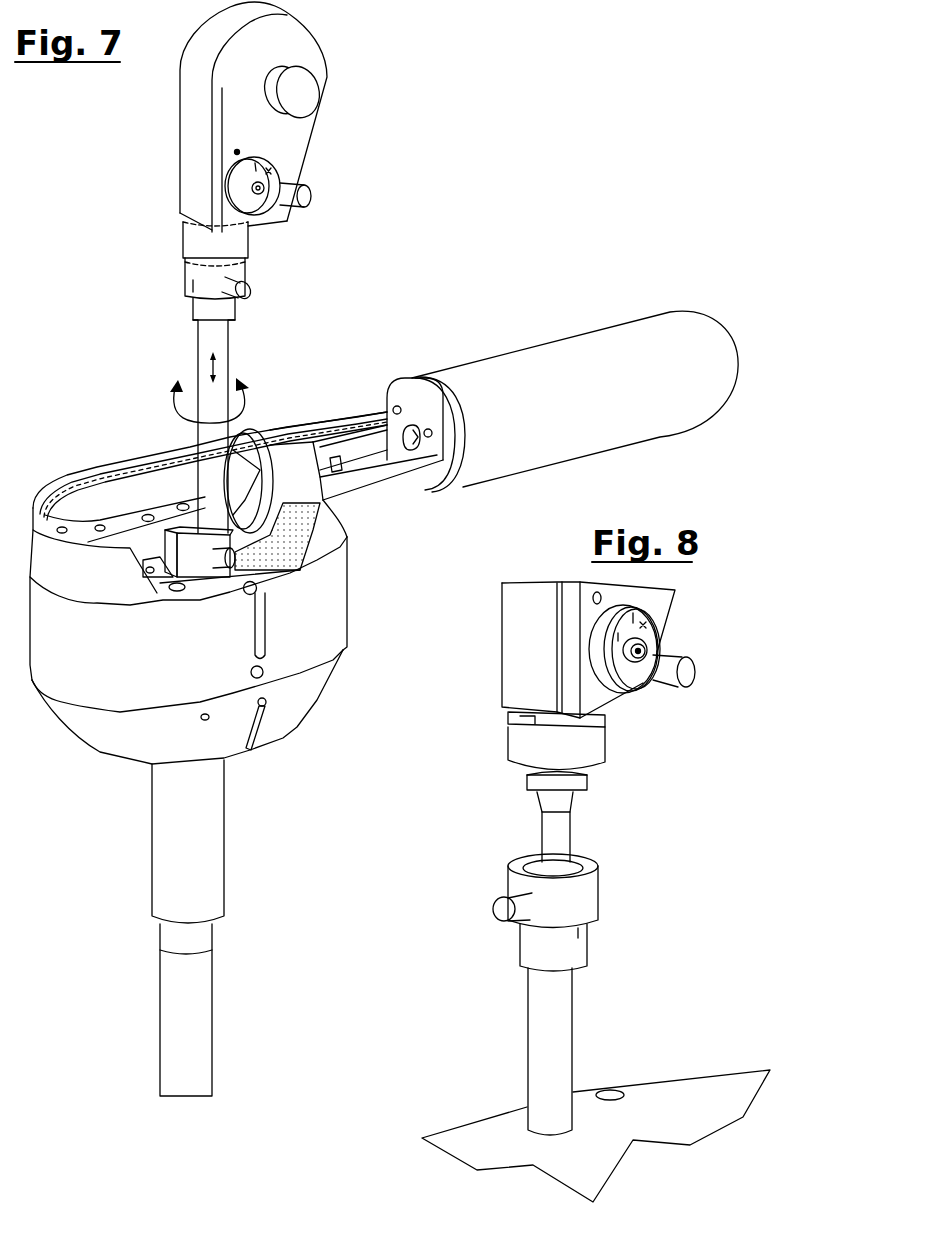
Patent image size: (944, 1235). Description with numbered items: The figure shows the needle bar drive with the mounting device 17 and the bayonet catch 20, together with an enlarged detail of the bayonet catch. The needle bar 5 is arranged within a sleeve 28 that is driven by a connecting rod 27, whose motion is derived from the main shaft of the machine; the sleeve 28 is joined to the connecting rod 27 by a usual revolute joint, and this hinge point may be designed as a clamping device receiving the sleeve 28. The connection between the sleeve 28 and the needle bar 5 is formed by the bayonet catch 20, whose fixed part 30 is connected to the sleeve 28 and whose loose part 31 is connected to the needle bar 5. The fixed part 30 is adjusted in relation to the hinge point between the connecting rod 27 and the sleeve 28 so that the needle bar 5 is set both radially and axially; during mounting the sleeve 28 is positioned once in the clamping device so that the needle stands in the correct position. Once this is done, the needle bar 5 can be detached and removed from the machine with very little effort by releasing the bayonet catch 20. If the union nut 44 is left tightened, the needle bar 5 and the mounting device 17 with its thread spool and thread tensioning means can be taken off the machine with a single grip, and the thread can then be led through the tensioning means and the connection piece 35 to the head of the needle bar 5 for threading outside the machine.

In FIG. 8, the needle bar 5 is at (553, 840).
In FIG. 7, the mounting device 17 is at (352, 64).
In FIG. 7, the bayonet catch 20 is at (118, 223).
In FIG. 8, the bayonet catch 20 is at (672, 829).
In FIG. 7, the connecting rod 27 is at (250, 495).
In FIG. 7, the sleeve 28 is at (203, 362).
In FIG. 8, the sleeve 28 is at (547, 1028).
In FIG. 7, the fixed part 30 is at (262, 233).
In FIG. 8, the fixed part 30 is at (557, 800).
In FIG. 7, the loose part 31 is at (238, 271).
In FIG. 8, the loose part 31 is at (527, 900).
In FIG. 8, the connection piece 35 is at (547, 723).
In FIG. 8, the union nut 44 is at (587, 747).